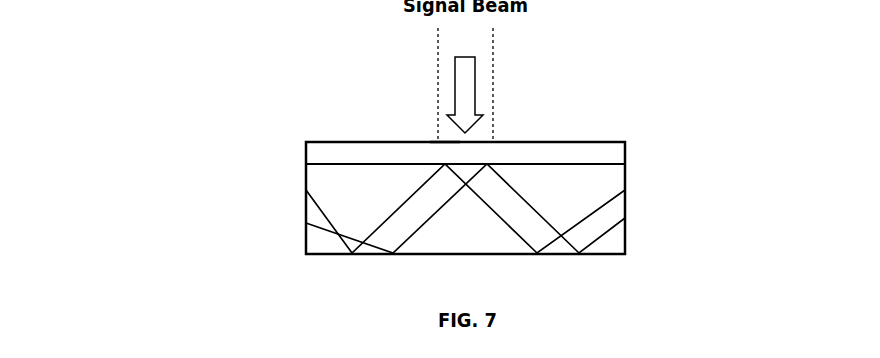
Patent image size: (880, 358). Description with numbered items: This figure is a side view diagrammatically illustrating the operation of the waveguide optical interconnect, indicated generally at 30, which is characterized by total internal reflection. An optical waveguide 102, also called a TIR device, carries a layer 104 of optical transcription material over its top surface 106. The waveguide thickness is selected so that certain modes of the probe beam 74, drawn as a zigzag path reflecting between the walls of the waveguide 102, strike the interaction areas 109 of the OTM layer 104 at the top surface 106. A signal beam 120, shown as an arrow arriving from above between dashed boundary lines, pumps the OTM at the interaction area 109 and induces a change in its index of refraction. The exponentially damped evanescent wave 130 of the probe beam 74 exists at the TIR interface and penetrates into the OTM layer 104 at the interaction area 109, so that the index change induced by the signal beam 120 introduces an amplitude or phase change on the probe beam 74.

The optical sensor apparatus 30 is at (489, 141).
The probe beam 74 is at (322, 222).
The optical waveguide 102 is at (627, 182).
The layer of optical transcription material 104 is at (587, 153).
The surface 106 is at (613, 163).
The interaction area 109 is at (468, 162).
The signal beam 120 is at (473, 50).
The evanescent wave 130 is at (443, 135).